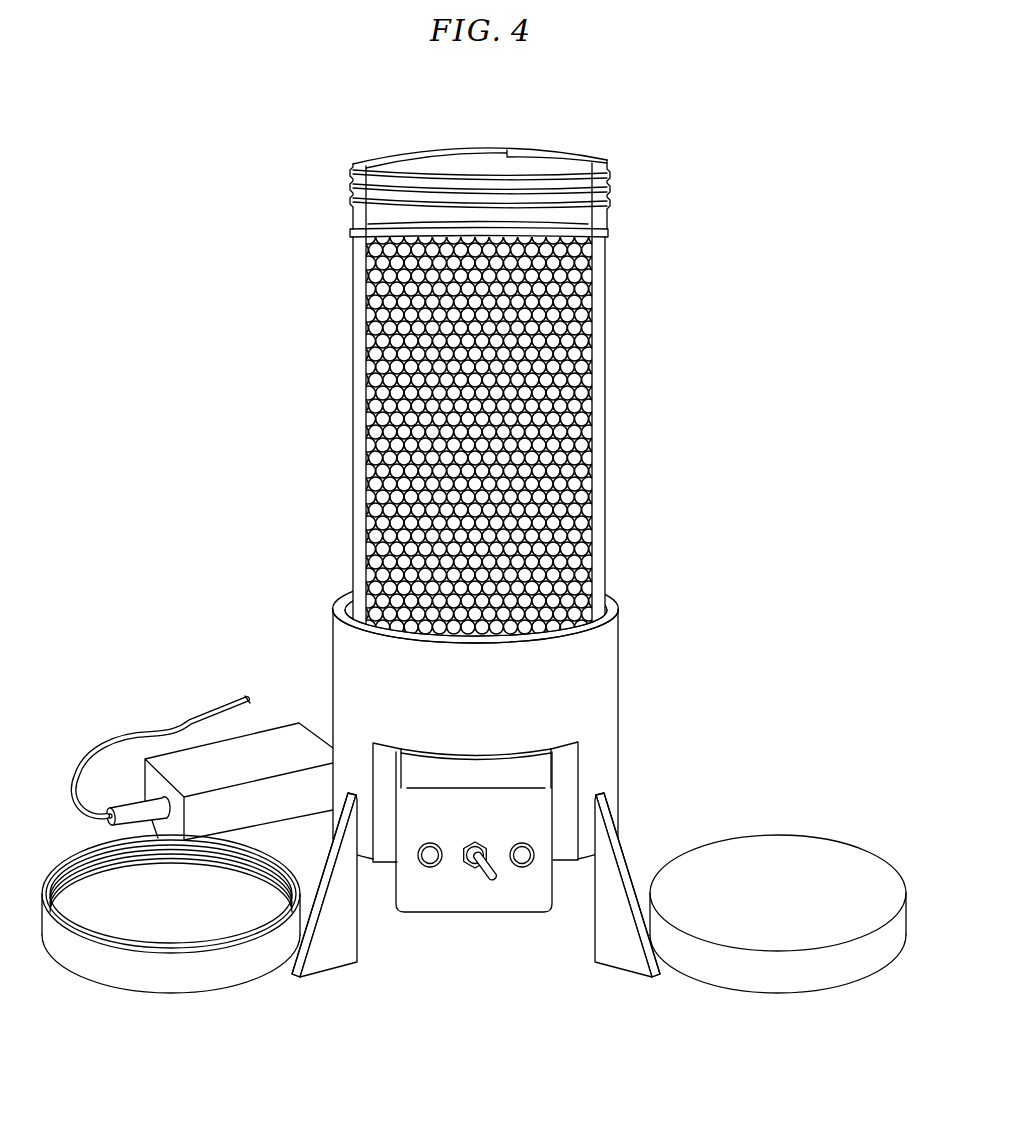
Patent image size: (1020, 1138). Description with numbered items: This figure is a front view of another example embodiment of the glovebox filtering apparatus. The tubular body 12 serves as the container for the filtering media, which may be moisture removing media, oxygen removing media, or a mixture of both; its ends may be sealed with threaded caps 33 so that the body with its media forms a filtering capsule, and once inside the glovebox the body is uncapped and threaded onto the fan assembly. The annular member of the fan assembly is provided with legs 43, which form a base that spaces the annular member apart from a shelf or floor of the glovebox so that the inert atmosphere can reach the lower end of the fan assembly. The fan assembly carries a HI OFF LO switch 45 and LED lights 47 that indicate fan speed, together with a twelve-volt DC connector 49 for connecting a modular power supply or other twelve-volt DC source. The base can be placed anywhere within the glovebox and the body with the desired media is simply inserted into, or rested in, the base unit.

The tubular body 12 is at (606, 289).
The threaded caps 33 is at (170, 972).
The legs 43 is at (325, 948).
The HI OFF LO switch 45 is at (467, 868).
The LED lights 47 is at (426, 868).
The 12.0 VDC connector 49 is at (285, 750).